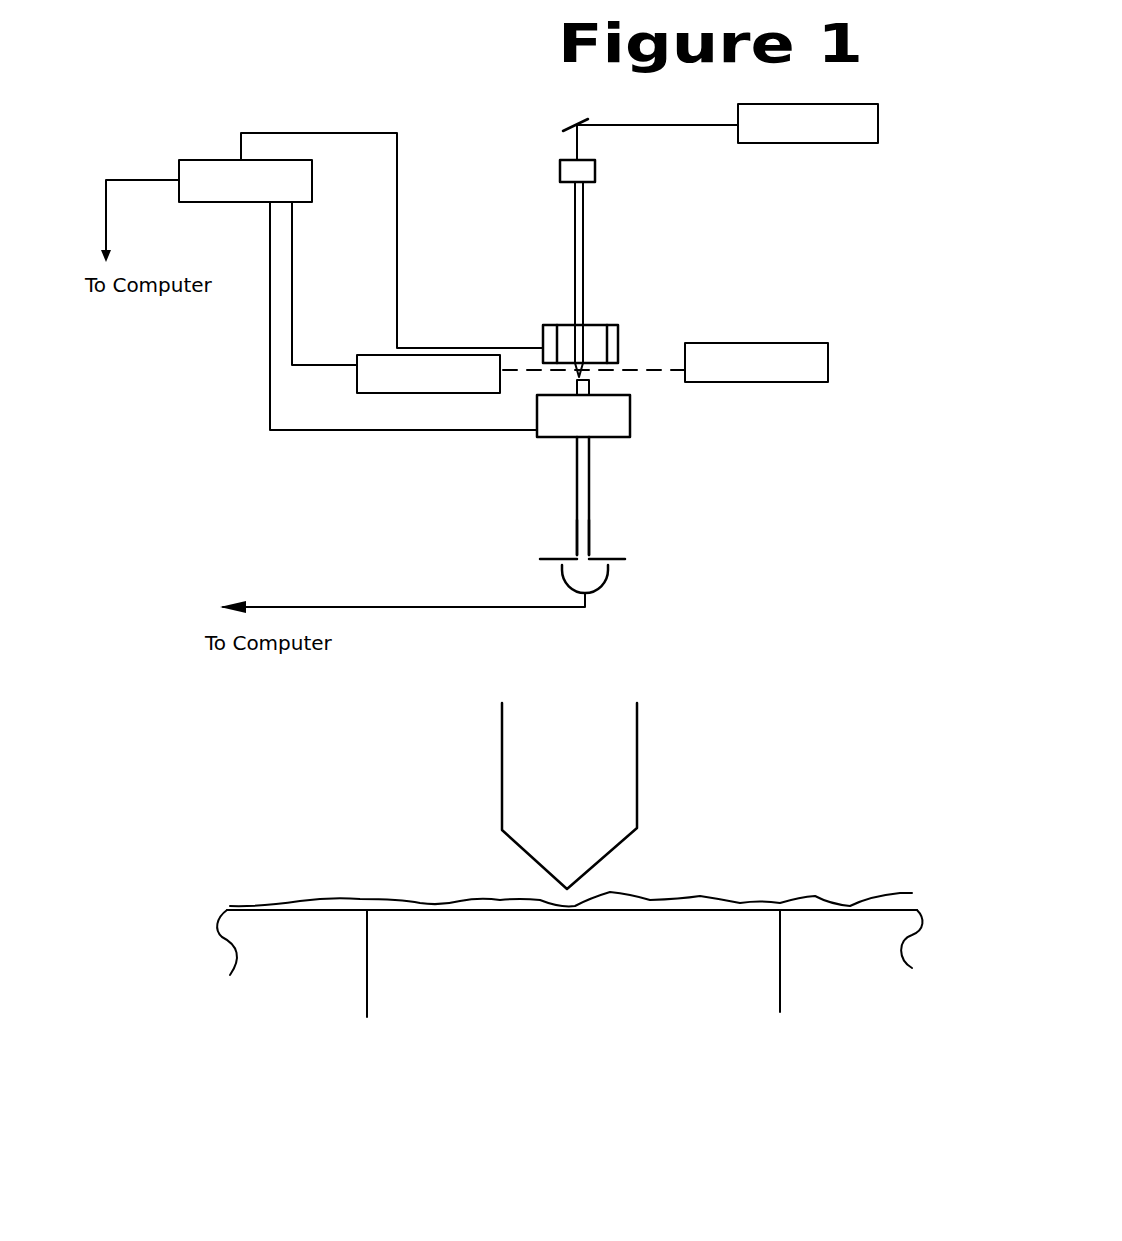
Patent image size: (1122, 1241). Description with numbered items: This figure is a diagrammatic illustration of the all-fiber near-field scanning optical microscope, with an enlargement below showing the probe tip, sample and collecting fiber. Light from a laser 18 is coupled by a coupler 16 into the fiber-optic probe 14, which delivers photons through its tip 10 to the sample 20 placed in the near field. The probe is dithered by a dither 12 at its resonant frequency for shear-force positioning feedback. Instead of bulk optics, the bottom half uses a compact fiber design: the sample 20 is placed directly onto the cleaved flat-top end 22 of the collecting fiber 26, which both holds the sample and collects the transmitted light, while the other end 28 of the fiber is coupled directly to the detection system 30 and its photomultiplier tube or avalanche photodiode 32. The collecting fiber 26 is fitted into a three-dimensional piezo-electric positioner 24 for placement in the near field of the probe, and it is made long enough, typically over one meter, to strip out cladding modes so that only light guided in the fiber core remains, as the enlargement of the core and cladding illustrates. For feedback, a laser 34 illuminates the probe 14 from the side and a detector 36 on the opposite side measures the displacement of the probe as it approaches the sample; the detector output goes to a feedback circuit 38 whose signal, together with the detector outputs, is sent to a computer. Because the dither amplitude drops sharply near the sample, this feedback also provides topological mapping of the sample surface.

The tip 10 is at (580, 380).
The dither 12 is at (612, 330).
The fiber-optic probe 14 is at (576, 256).
The coupler 16 is at (562, 168).
The laser 18 is at (800, 140).
The sample 20 is at (565, 385).
The cleaved flat-top end of the fiber-optic cable 22 is at (568, 393).
The 3-D PZT positioner 24 is at (571, 427).
The collecting fiber 26 is at (577, 534).
The other end of the collecting fiber 28 is at (590, 556).
The detection system 30 is at (625, 558).
The photodetector 32 is at (567, 577).
The laser 34 is at (797, 350).
The detector 36 is at (363, 392).
The feedback circuit 38 is at (187, 165).